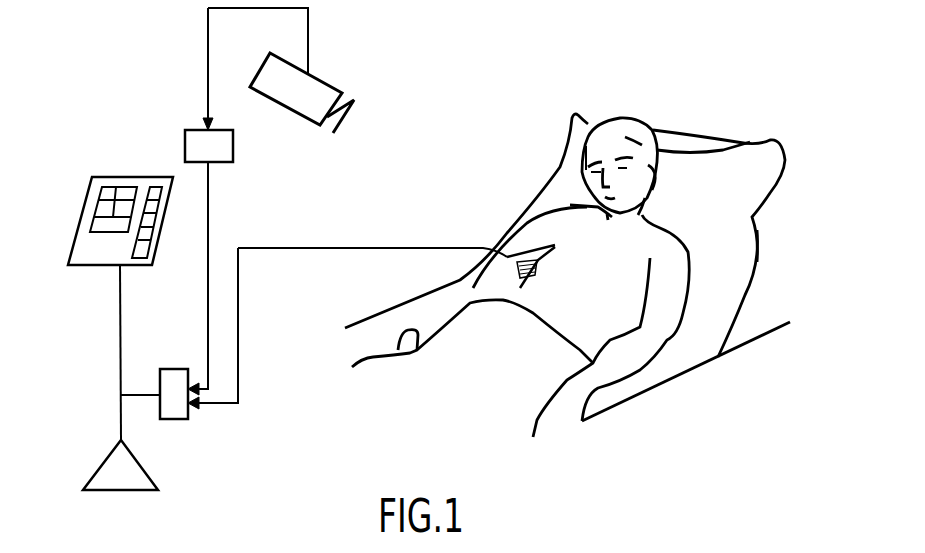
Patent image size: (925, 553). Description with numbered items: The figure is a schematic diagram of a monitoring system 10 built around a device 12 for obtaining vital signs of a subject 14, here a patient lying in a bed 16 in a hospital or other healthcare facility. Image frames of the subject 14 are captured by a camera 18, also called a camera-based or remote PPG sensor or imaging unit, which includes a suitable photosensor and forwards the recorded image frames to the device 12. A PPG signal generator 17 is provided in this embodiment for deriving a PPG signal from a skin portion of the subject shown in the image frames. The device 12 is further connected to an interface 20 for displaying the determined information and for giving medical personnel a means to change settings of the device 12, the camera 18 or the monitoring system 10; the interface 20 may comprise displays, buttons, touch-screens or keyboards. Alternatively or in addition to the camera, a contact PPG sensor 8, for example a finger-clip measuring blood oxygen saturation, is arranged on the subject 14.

The PPG sensor 8 is at (533, 265).
The monitoring system 10 is at (133, 107).
The device 12 is at (177, 420).
The subject 14 is at (665, 227).
The bed 16 is at (717, 318).
The PPG signal generator 17 is at (227, 165).
The camera 18 is at (322, 80).
The interface 20 is at (88, 202).